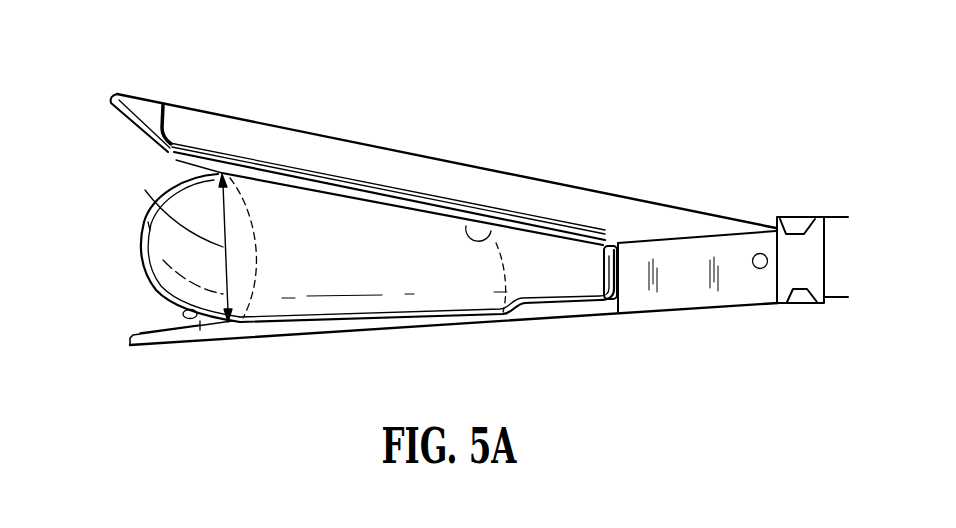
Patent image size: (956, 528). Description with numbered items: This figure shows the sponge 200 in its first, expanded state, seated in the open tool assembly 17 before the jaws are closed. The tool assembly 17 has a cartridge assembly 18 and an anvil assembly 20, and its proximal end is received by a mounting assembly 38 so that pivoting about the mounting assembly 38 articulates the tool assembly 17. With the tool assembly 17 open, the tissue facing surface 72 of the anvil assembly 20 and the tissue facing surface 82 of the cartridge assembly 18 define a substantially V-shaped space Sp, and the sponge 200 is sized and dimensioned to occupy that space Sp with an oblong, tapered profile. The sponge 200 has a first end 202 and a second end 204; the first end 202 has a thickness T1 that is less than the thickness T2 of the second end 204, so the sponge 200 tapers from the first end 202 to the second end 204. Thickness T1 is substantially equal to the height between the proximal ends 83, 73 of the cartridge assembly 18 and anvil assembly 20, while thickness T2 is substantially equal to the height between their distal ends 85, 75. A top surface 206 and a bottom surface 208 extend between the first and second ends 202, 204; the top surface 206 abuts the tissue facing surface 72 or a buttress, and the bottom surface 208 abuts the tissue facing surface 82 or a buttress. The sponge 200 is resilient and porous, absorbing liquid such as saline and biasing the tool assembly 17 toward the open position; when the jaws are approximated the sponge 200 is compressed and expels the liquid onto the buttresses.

The tool assembly 17 is at (400, 83).
The cartridge assembly 18 is at (322, 142).
The anvil assembly 20 is at (202, 350).
The mounting assembly 38 is at (793, 213).
The tissue facing surface 72 is at (187, 324).
The proximal end 73 is at (562, 313).
The distal end 75 is at (186, 316).
The tissue facing surface 82 is at (493, 222).
The proximal end 83 is at (647, 200).
The distal end 85 is at (128, 94).
The sponge 200 is at (385, 252).
The first end 202 is at (590, 268).
The second end 204 is at (150, 262).
The top surface 206 is at (228, 163).
The bottom surface 208 is at (312, 327).
The thickness T1 is at (618, 282).
The thickness T2 is at (175, 241).
The space Sp is at (138, 213).